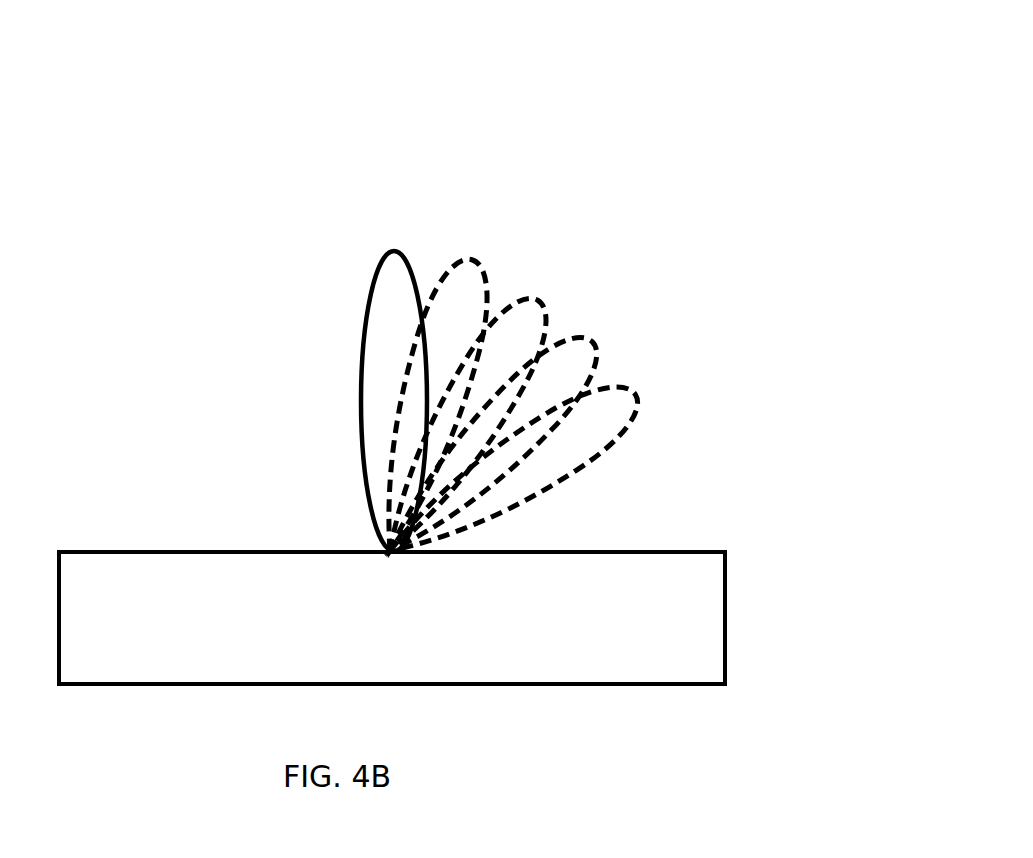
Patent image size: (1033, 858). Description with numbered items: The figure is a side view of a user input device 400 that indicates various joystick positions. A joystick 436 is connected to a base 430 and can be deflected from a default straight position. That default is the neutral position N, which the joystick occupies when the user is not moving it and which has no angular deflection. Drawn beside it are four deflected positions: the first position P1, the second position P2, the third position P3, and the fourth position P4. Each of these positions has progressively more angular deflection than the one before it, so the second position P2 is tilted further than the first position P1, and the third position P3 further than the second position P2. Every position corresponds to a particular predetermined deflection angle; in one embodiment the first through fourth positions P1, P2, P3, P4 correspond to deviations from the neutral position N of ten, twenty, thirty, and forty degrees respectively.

The user input device 400 is at (608, 113).
The base 430 is at (392, 618).
The joystick 436 is at (387, 333).
The neutral position N is at (395, 248).
The first position P1 is at (465, 258).
The second position P2 is at (535, 297).
The third position P3 is at (590, 340).
The fourth position P4 is at (633, 390).